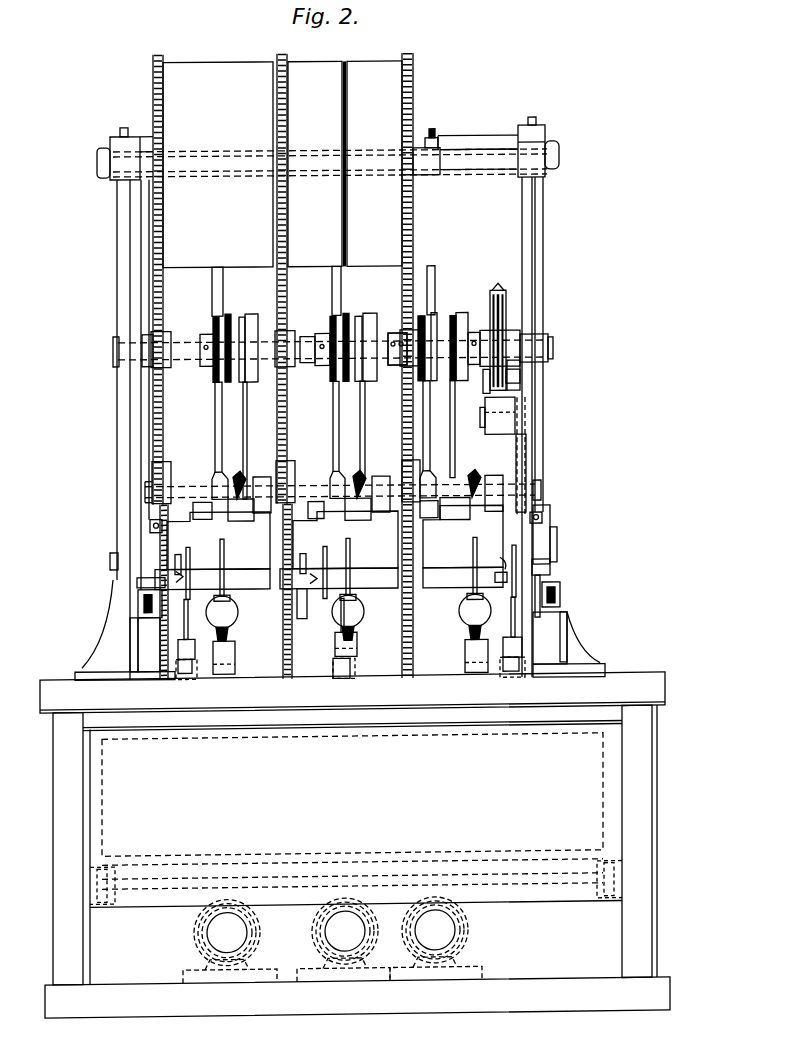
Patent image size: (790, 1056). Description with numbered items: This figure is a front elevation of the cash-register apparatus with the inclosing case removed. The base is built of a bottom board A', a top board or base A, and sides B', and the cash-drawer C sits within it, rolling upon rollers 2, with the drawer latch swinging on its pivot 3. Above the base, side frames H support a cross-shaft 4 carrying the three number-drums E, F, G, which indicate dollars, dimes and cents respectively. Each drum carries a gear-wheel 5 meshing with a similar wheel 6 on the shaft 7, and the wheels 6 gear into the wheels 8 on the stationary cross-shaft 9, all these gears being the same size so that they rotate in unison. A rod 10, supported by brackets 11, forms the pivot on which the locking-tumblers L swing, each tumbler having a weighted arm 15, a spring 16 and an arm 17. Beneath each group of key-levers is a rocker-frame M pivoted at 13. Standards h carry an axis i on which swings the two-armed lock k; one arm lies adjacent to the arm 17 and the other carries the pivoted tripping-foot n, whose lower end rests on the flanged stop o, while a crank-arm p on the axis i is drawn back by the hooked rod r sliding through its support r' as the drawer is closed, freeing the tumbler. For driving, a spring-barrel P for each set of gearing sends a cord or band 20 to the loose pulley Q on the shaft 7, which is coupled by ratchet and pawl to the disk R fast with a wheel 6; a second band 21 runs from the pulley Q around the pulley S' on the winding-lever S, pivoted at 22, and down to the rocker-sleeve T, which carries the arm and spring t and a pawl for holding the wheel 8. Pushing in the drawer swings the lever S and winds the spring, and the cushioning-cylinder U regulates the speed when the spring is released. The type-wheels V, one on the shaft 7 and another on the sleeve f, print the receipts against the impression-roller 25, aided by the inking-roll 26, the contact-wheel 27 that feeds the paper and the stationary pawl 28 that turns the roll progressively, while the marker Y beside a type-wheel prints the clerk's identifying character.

The rollers 2 is at (115, 905).
The pivot 3 is at (395, 370).
The cross-shaft 4 is at (460, 178).
The gear-wheel 5 is at (416, 68).
The gear-wheel 6 is at (404, 398).
The shaft 7 is at (112, 352).
The gear-wheel 8 is at (171, 476).
The stationary cross-shaft 9 is at (110, 562).
The rod 10 is at (150, 527).
The brackets 11 is at (160, 535).
The pivot 13 is at (231, 600).
The weighted arm 15 is at (366, 579).
The spring 16 is at (468, 636).
The arm 17 is at (190, 554).
The cord or band 20 is at (248, 440).
The cord or band 21 is at (214, 415).
The pivot 22 is at (146, 136).
The impression-roller 25 is at (497, 415).
The inking-roll 26 is at (486, 394).
The contact-wheel 27 is at (522, 380).
The stationary pawl 28 is at (527, 426).
The top board or base A is at (352, 692).
The bottom board A' is at (357, 997).
The sides B' is at (355, 845).
The cash-drawer C is at (352, 814).
The number-drum E is at (218, 170).
The number-drum F is at (316, 169).
The number-drum G is at (374, 165).
The side frames H is at (116, 243).
The locking-tumbler L is at (335, 537).
The rocker-frame M is at (329, 578).
The spring-barrel P is at (349, 509).
The pulley Q is at (236, 322).
The disk R is at (262, 326).
The winding-lever S is at (320, 291).
The pulley S' is at (315, 509).
The rocker-sleeve T is at (503, 482).
The cushioning-cylinder U is at (332, 939).
The type-wheel V is at (498, 328).
The marker Y is at (522, 372).
The sleeve f is at (300, 338).
The standards h is at (160, 641).
The axis i is at (178, 555).
The lock k is at (500, 562).
The tripping-foot n is at (362, 646).
The flanged stop o is at (505, 680).
The crank-arm p is at (137, 583).
The hooked rod r is at (349, 601).
The support r' is at (353, 636).
The arm and spring t is at (486, 478).